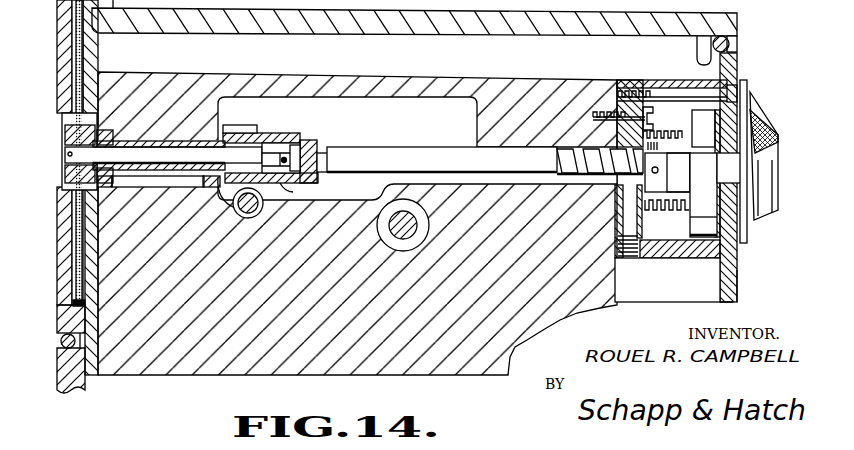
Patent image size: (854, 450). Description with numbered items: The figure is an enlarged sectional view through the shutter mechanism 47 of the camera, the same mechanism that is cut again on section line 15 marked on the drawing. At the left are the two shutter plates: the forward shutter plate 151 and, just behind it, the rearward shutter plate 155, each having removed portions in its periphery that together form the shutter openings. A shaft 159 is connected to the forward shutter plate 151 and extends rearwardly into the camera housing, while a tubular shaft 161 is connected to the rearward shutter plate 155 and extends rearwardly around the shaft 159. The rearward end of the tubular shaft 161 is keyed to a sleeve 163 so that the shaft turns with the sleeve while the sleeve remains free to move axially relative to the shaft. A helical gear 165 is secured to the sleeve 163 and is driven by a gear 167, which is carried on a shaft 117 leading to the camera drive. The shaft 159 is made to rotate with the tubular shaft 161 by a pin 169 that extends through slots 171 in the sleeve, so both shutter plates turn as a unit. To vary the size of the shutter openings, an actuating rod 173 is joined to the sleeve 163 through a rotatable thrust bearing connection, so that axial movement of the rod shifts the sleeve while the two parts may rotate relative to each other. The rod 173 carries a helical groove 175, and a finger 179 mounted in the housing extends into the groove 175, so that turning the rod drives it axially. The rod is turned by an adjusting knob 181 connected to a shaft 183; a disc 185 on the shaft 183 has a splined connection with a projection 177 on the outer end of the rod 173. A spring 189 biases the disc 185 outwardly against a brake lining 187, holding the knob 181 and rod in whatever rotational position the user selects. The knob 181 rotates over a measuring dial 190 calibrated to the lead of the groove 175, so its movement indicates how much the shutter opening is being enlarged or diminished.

The section line 15— 15 is at (298, 122).
The shutter mechanism 47 is at (353, 117).
The shaft 117 is at (242, 208).
The forward shutter plate 151 is at (75, 63).
The rearward shutter plate 155 is at (84, 48).
The shaft 159 is at (170, 160).
The tubular shaft 161 is at (130, 170).
The sleeve 163 is at (284, 141).
The helical gear 165 is at (240, 140).
The gear 167 is at (236, 198).
The pin 169 is at (304, 194).
The slots 171 is at (292, 148).
The actuating rod 173 is at (440, 126).
The helical groove 175 is at (581, 128).
The projection 177 is at (655, 178).
The finger 179 is at (638, 257).
The adjusting knob 181 is at (773, 136).
The shaft 183 is at (727, 164).
The disc 185 is at (737, 247).
The brake lining 187 is at (718, 121).
The spring 189 is at (666, 133).
The measuring dial 190 is at (735, 272).